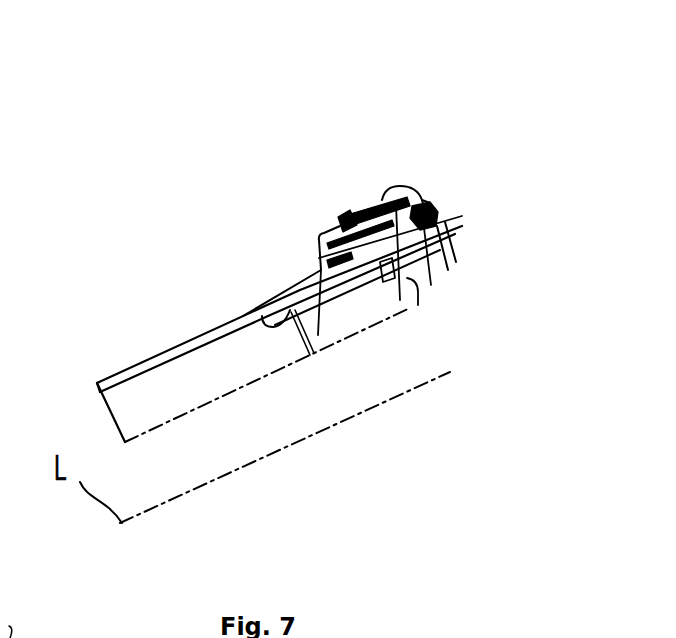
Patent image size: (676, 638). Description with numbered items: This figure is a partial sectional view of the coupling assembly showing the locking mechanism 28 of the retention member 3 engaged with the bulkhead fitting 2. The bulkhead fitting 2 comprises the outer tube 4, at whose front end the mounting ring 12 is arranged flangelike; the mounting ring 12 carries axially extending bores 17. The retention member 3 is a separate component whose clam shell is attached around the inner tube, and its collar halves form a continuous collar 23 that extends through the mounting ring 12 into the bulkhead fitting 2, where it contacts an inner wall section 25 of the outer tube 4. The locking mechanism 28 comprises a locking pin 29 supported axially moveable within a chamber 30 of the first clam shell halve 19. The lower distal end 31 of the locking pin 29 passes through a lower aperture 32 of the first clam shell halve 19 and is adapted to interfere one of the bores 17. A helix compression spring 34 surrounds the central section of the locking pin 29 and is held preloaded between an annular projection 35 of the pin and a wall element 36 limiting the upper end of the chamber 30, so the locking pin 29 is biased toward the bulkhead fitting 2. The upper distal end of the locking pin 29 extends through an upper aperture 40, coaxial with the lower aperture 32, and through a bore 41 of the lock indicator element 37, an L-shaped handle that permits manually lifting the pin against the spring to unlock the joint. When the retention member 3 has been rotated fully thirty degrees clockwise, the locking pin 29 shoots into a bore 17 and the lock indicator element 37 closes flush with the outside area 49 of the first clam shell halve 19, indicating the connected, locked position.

The bulkhead fitting 2 is at (183, 340).
The retention member 3 is at (452, 253).
The outer tube 4 is at (130, 372).
The mounting ring 12 is at (318, 250).
The bores 17 is at (325, 258).
The first clam shell halve 19 is at (434, 264).
The collar 23 is at (303, 353).
The inner wall section 25 is at (256, 318).
The locking mechanism 28 is at (385, 182).
The locking pin 29 is at (400, 300).
The chamber 30 is at (432, 286).
The lower distal end 31 is at (340, 214).
The lower aperture 32 is at (353, 240).
The helix compression spring 34 is at (411, 203).
The annular projection 35 is at (345, 216).
The wall element 36 is at (440, 249).
The lock indicator element 37 is at (374, 204).
The upper aperture 40 is at (436, 205).
The bore 41 is at (434, 208).
The outside area 49 is at (438, 238).